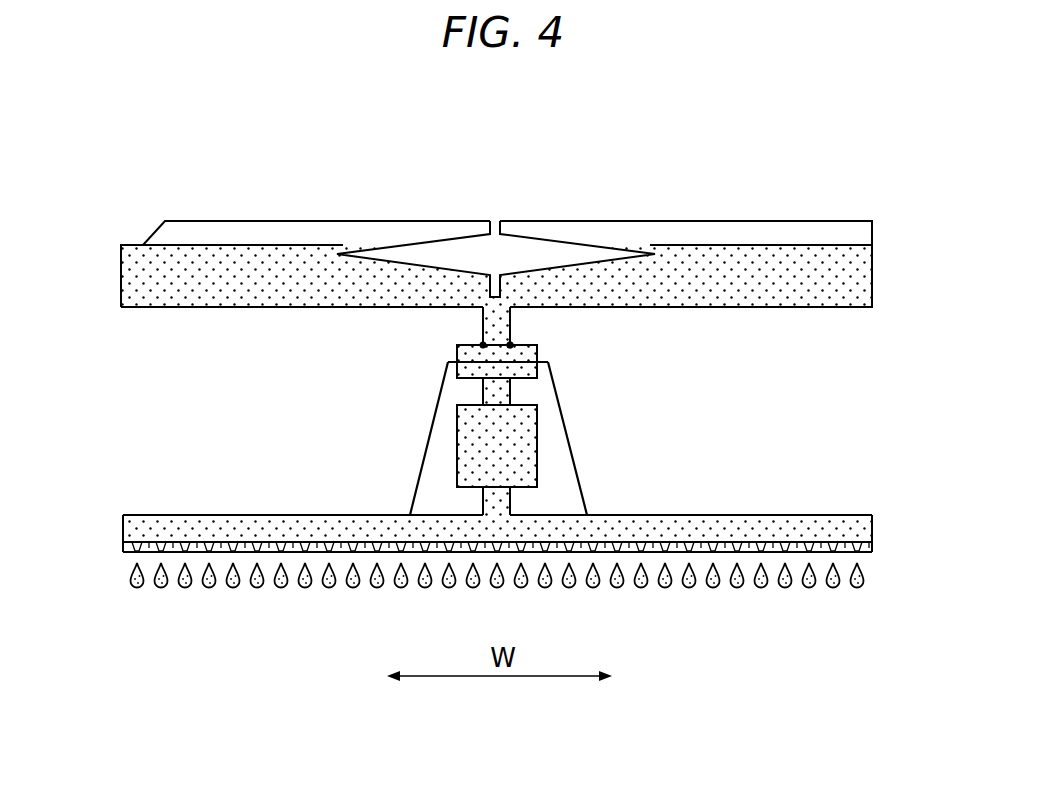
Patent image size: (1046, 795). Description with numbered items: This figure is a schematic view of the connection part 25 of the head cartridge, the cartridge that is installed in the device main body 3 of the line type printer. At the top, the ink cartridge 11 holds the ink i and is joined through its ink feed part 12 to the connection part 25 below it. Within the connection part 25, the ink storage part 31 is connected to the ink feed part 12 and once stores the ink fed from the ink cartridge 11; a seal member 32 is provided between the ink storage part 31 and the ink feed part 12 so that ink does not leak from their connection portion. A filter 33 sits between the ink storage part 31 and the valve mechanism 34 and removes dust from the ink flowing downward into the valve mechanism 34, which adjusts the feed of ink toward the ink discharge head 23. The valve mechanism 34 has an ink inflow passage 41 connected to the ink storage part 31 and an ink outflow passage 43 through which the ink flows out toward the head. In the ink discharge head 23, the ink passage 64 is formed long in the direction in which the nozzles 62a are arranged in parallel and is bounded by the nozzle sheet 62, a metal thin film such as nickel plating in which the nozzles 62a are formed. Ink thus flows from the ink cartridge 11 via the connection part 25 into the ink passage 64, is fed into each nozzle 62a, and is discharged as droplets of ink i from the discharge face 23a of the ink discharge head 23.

The device main body 3 is at (192, 192).
The ink cartridge 11 is at (786, 222).
The ink feed part 12 is at (483, 321).
The connection part 25 is at (370, 312).
The ink storage part 31 is at (457, 353).
The seal member 32 is at (512, 345).
The filter 33 is at (485, 386).
The valve mechanism 34 is at (530, 448).
The ink inflow passage 41 is at (497, 395).
The ink outflow passage 43 is at (515, 495).
The ink passage 64 is at (233, 520).
The nozzle sheet 62 is at (123, 547).
The nozzles 62a is at (136, 550).
The ink discharge head 23 is at (840, 505).
The discharge face 23a is at (852, 552).
The ink i is at (698, 262).